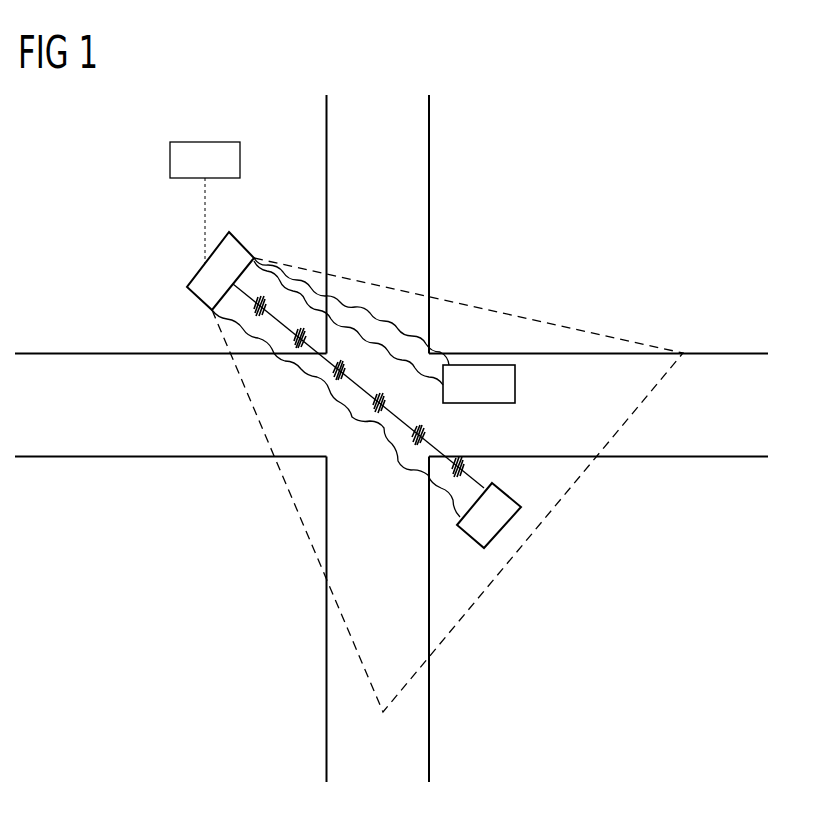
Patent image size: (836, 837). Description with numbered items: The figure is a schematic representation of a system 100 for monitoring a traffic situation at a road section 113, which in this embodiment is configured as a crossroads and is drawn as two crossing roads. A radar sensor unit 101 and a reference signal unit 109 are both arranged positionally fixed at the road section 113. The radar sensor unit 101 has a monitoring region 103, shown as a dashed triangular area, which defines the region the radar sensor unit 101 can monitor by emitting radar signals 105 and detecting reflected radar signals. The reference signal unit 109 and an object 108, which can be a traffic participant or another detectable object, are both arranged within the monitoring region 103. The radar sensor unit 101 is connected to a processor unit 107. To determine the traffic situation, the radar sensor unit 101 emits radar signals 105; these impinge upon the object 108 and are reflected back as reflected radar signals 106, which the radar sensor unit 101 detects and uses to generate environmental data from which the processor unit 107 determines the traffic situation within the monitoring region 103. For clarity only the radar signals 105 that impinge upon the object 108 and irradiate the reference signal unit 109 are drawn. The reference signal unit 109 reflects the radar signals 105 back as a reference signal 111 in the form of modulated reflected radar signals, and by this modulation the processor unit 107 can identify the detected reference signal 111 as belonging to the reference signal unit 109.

The system 100 is at (670, 112).
The radar sensor unit 101 is at (196, 278).
The monitoring region 103 is at (505, 308).
The radar signals 105 is at (297, 292).
The reflected radar signals 106 is at (372, 313).
The processor unit 107 is at (170, 158).
The object 108 is at (515, 383).
The reference signal unit 109 is at (506, 528).
The reference signal 111 is at (440, 452).
The road section 113 is at (430, 166).